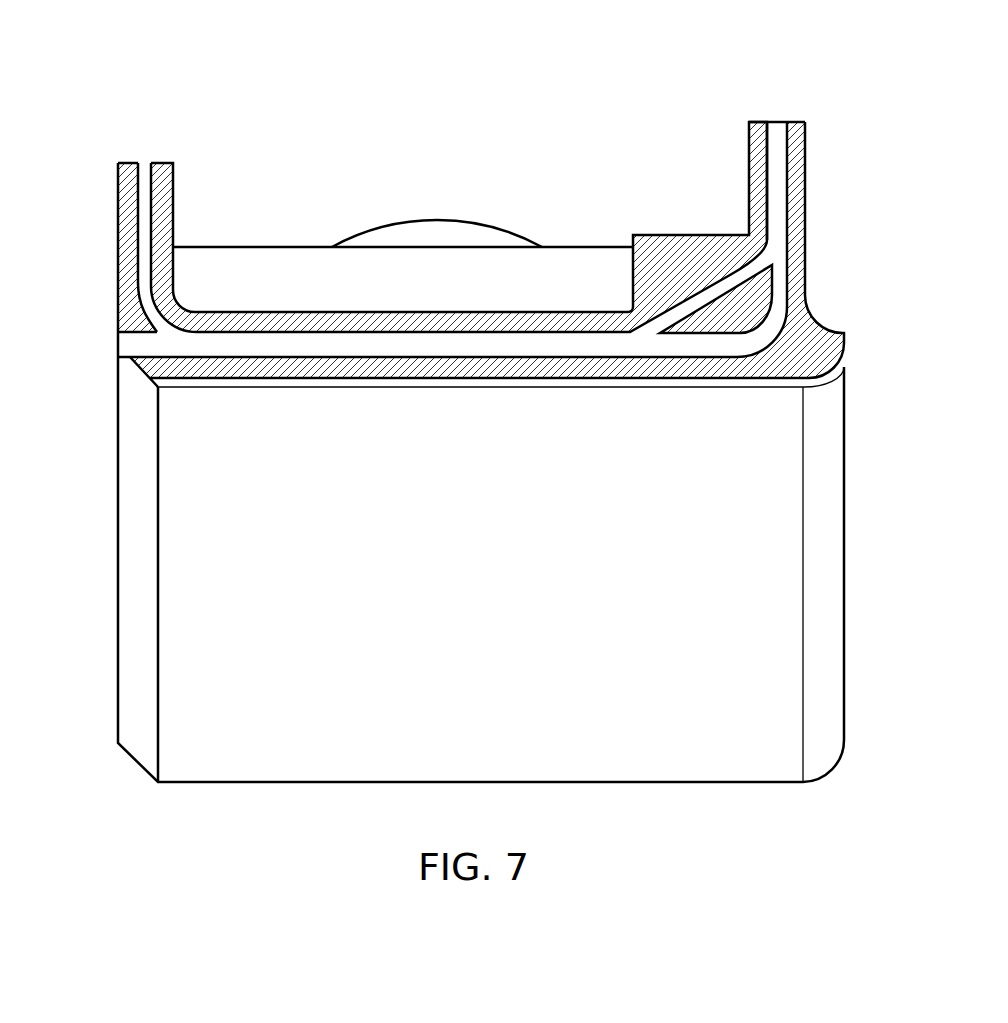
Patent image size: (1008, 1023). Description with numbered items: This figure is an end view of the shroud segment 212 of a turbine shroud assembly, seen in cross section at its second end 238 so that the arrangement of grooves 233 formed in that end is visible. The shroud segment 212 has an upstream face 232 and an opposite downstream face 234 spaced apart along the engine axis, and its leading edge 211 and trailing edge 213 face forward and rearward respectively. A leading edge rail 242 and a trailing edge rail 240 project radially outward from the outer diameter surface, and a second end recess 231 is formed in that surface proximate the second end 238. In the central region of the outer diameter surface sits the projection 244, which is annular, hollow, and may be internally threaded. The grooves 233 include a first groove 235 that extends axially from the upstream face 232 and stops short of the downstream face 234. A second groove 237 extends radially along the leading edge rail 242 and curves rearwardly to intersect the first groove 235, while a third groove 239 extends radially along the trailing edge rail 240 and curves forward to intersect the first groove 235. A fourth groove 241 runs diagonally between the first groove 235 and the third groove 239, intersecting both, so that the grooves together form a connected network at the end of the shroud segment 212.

The shroud segment 212 is at (292, 118).
The leading edge 211 is at (117, 277).
The trailing edge 213 is at (807, 270).
The second end recess 231 is at (558, 255).
The upstream face 232 is at (117, 173).
The grooves 233 is at (268, 326).
The downstream face 234 is at (807, 142).
The first groove 235 is at (132, 345).
The second groove 237 is at (147, 180).
The second end 238 is at (687, 372).
The third groove 239 is at (777, 153).
The trailing edge rail 240 is at (802, 195).
The fourth groove 241 is at (727, 283).
The leading edge rail 242 is at (128, 183).
The projection 244 is at (423, 220).